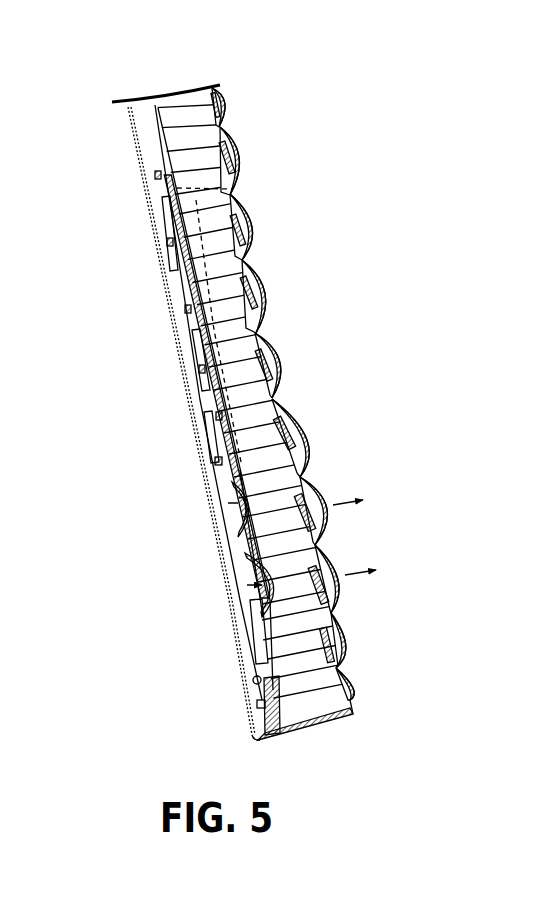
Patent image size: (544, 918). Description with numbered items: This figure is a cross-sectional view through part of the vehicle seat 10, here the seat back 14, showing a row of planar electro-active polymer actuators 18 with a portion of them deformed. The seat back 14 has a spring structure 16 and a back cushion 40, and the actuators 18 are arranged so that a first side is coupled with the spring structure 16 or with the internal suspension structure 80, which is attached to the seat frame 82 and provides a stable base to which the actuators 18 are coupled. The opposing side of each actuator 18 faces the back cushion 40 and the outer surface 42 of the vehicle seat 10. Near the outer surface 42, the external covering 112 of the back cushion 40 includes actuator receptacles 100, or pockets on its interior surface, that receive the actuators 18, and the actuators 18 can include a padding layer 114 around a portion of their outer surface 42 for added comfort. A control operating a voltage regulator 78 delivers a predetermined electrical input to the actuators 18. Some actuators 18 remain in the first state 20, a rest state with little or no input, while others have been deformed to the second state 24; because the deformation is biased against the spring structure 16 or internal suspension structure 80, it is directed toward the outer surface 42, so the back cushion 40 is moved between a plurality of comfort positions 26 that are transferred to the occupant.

The vehicle seat 10 is at (110, 227).
The seat back 14 is at (176, 364).
The spring structure 16 is at (222, 460).
The electro-active polymer actuators 18 is at (163, 192).
The first state 20 is at (180, 293).
The second state 24 is at (237, 185).
The comfort positions 26 is at (347, 546).
The back cushion 40 is at (178, 118).
The outer surface 42 is at (224, 112).
The voltage regulator 78 is at (262, 721).
The internal suspension structure 80 is at (232, 482).
The seat frame 82 is at (295, 724).
The actuator receptacles 100 is at (257, 338).
The external covering 112 is at (257, 270).
The padding layer 114 is at (247, 203).